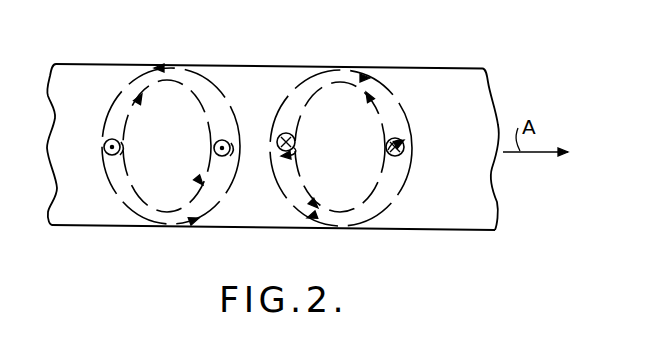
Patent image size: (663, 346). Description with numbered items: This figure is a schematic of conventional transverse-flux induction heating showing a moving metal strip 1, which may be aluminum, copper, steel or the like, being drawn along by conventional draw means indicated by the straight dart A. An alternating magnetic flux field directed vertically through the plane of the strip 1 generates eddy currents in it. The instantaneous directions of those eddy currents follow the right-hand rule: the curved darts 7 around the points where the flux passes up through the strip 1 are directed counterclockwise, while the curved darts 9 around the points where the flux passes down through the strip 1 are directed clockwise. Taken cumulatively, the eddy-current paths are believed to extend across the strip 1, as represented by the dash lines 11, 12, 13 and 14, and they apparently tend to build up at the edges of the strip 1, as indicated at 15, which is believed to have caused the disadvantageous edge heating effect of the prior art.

The moving metal strip 1 is at (433, 220).
The darts 7 is at (103, 150).
The darts 9 is at (294, 147).
The dash line 11 is at (137, 106).
The dash line 12 is at (232, 100).
The dash line 13 is at (289, 93).
The dash line 14 is at (370, 96).
The edge build-up of eddy currents 15 is at (177, 40).